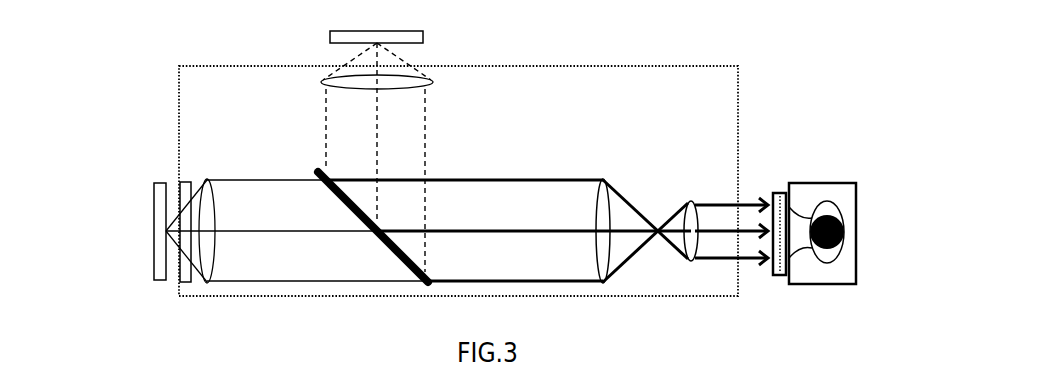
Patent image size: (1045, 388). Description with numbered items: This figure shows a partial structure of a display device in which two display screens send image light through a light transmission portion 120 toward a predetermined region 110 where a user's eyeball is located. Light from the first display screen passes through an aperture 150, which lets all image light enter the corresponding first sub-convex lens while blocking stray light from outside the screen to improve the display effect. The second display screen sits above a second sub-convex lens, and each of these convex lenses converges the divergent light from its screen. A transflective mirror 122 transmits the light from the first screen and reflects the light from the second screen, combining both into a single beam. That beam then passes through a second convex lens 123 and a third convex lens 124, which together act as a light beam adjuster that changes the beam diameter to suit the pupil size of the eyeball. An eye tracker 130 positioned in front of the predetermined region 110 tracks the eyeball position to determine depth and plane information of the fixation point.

The light transmission portion 120 is at (435, 169).
The aperture 150 is at (154, 216).
The transflective mirror 122 is at (447, 248).
The second convex lens 123 is at (589, 250).
The third convex lens 124 is at (672, 261).
The eye tracker 130 is at (816, 211).
The predetermined region 110 is at (856, 233).